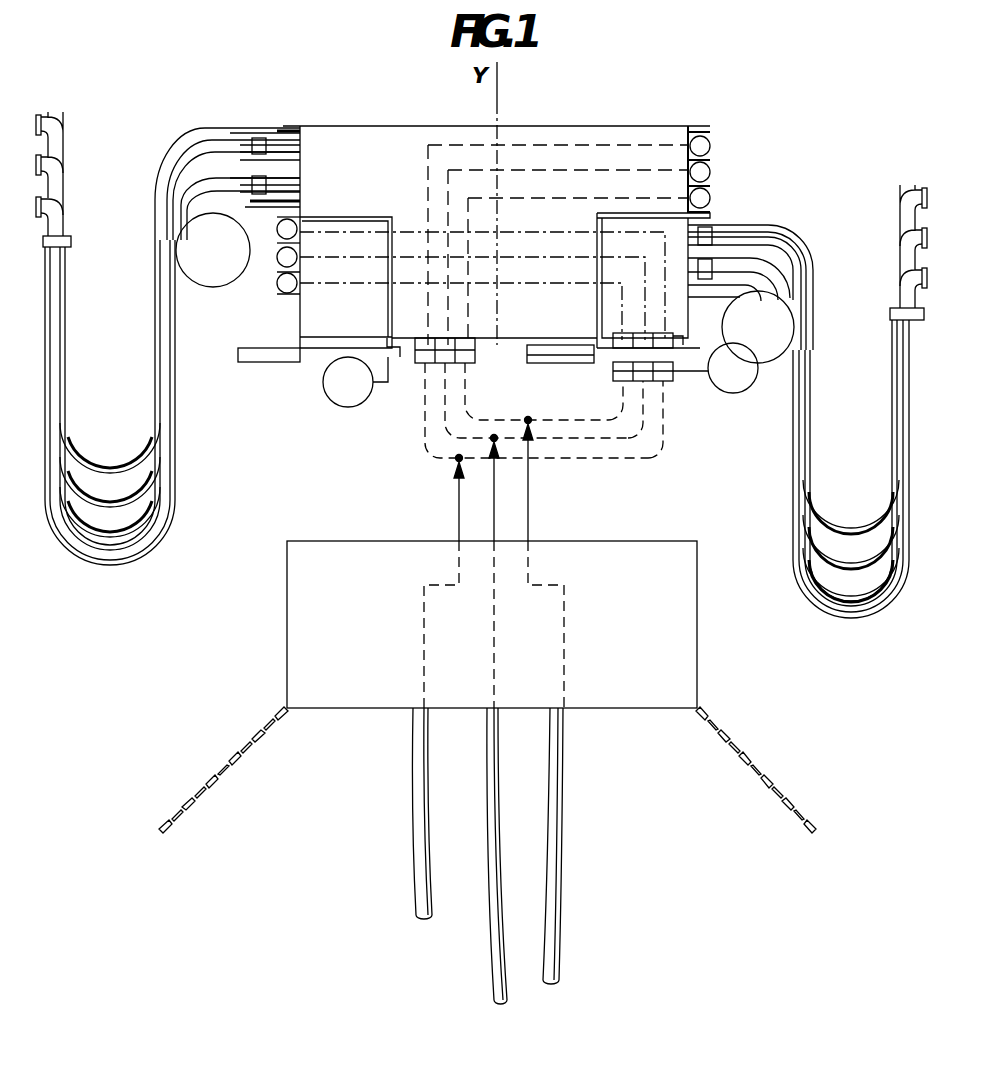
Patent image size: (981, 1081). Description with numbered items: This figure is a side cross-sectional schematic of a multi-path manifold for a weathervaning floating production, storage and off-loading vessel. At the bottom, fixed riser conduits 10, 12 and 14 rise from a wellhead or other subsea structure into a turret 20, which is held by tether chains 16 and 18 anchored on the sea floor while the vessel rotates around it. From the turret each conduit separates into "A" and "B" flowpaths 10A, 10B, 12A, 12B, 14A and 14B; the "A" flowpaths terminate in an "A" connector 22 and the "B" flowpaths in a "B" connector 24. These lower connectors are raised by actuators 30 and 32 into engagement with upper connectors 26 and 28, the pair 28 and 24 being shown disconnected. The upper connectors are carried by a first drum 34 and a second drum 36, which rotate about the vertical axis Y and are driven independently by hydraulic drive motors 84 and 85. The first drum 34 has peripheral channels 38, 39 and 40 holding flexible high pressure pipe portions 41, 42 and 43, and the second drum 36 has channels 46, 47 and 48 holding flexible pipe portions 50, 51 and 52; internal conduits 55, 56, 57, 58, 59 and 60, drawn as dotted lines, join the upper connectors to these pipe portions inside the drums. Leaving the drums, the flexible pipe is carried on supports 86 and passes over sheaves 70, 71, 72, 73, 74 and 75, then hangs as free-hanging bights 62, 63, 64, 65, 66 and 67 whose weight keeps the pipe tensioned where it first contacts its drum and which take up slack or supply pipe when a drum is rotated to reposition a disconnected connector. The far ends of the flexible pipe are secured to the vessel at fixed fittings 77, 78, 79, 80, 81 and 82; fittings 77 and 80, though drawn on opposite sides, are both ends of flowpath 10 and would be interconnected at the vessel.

The fixed riser conduit 10 is at (422, 828).
The fixed riser conduit 12 is at (494, 828).
The fixed riser conduit 14 is at (560, 828).
The "A" flowpath 10A is at (424, 424).
The "B" flowpath 10B is at (665, 452).
The "A" flowpath 12A is at (455, 384).
The "B" flowpath 12B is at (660, 416).
The "A" flowpath 14A is at (466, 410).
The "B" flowpath 14B is at (618, 398).
The tether chain 16 is at (236, 766).
The tether chain 18 is at (798, 780).
The turret 20 is at (674, 546).
The "A" connector 22 is at (424, 366).
The "B" connector 24 is at (685, 382).
The upper connector 26 is at (468, 346).
The upper connector 28 is at (606, 356).
The actuator 30 is at (323, 383).
The actuator 32 is at (736, 392).
The first drum 34 is at (374, 161).
The second drum 36 is at (374, 324).
The channel 38 is at (712, 152).
The channel 39 is at (712, 178).
The channel 40 is at (712, 205).
The flexible high pressure pipe portion 41 is at (696, 130).
The flexible high pressure pipe portion 42 is at (688, 162).
The flexible high pressure pipe portion 43 is at (688, 188).
The channel 46 is at (262, 240).
The channel 47 is at (278, 260).
The channel 48 is at (278, 292).
The flexible pipe portion 50 is at (298, 238).
The flexible pipe portion 51 is at (298, 263).
The flexible pipe portion 52 is at (298, 289).
The internal conduit 55 is at (541, 143).
The internal conduit 56 is at (560, 174).
The internal conduit 57 is at (572, 202).
The internal conduit 58 is at (516, 234).
The internal conduit 59 is at (528, 262).
The internal conduit 60 is at (542, 288).
The free-hanging bight 62 is at (110, 486).
The free-hanging bight 63 is at (150, 513).
The free-hanging bight 64 is at (120, 562).
The free-hanging bight 65 is at (844, 530).
The free-hanging bight 66 is at (815, 566).
The free-hanging bight 67 is at (848, 618).
The sheave 70 is at (202, 145).
The sheave 71 is at (180, 197).
The sheave 72 is at (178, 255).
The sheave 73 is at (780, 242).
The sheave 74 is at (806, 272).
The sheave 75 is at (800, 340).
The fixed fitting 77 is at (61, 140).
The fixed fitting 78 is at (61, 181).
The fixed fitting 79 is at (61, 223).
The fixed fitting 80 is at (900, 200).
The fixed fitting 81 is at (900, 242).
The fixed fitting 82 is at (900, 288).
The hydraulic drive motor 84 is at (568, 364).
The hydraulic drive motor 85 is at (264, 362).
The support 86 is at (257, 150).